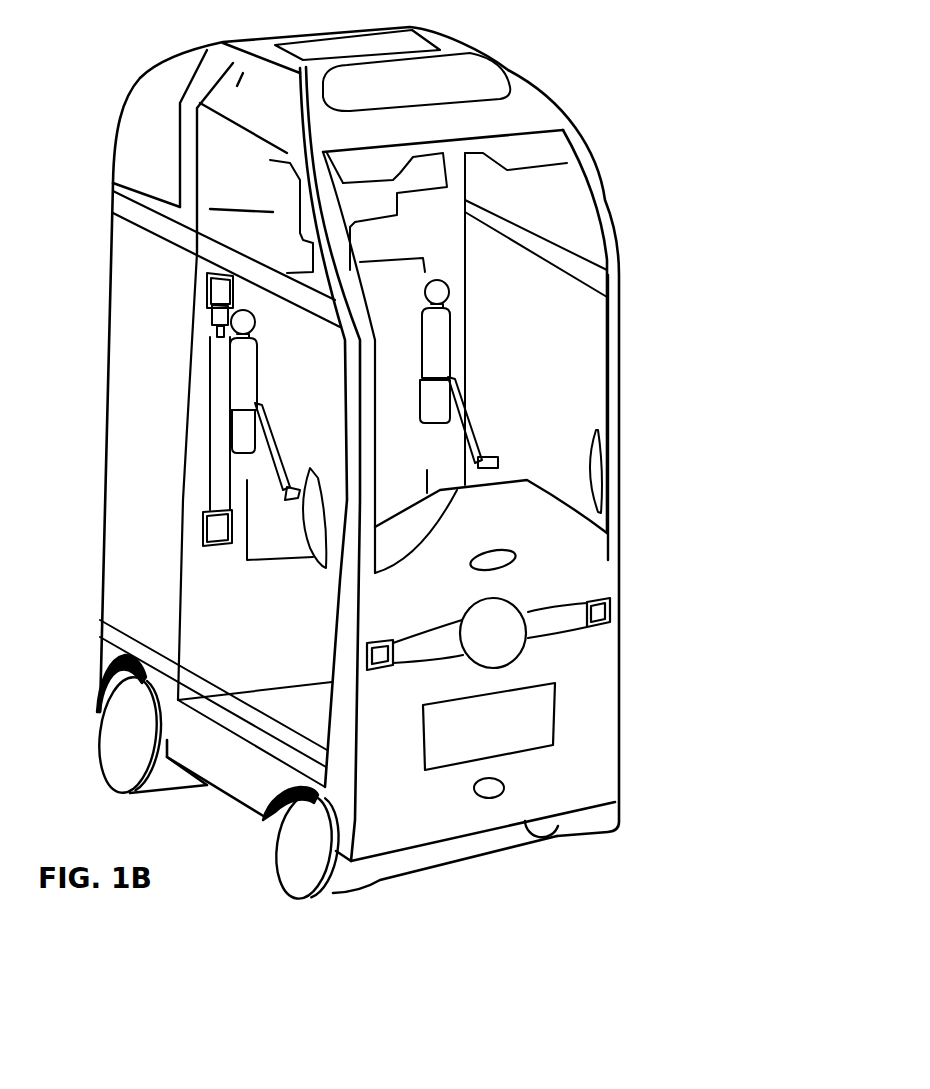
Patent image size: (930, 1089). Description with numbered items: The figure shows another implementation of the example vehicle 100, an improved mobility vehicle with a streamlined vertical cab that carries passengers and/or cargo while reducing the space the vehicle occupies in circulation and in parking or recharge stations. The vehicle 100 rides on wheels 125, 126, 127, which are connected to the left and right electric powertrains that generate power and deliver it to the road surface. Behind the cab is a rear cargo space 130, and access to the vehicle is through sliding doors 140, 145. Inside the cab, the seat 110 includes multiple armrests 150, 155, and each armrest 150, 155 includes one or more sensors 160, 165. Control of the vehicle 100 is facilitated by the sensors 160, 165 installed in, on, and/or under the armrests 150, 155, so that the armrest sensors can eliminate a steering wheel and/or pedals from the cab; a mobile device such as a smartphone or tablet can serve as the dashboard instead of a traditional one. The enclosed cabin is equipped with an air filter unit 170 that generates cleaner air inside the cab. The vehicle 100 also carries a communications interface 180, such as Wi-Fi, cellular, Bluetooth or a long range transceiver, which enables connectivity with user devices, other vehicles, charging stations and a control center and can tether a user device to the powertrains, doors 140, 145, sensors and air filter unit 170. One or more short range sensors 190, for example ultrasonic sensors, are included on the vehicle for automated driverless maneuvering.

The vehicle 100 is at (507, 70).
The seat 110 is at (390, 272).
The wheel 125 is at (110, 768).
The wheel 126 is at (293, 893).
The wheel 127 is at (620, 813).
The rear cargo space 130 is at (125, 262).
The sliding door 140 is at (207, 558).
The sliding door 145 is at (563, 337).
The armrest 150 is at (290, 480).
The armrest 155 is at (463, 407).
The sensor 160 is at (313, 507).
The sensor 165 is at (507, 462).
The air filter unit 170 is at (247, 105).
The communications interface 180 is at (503, 779).
The short range sensor 190 is at (527, 650).